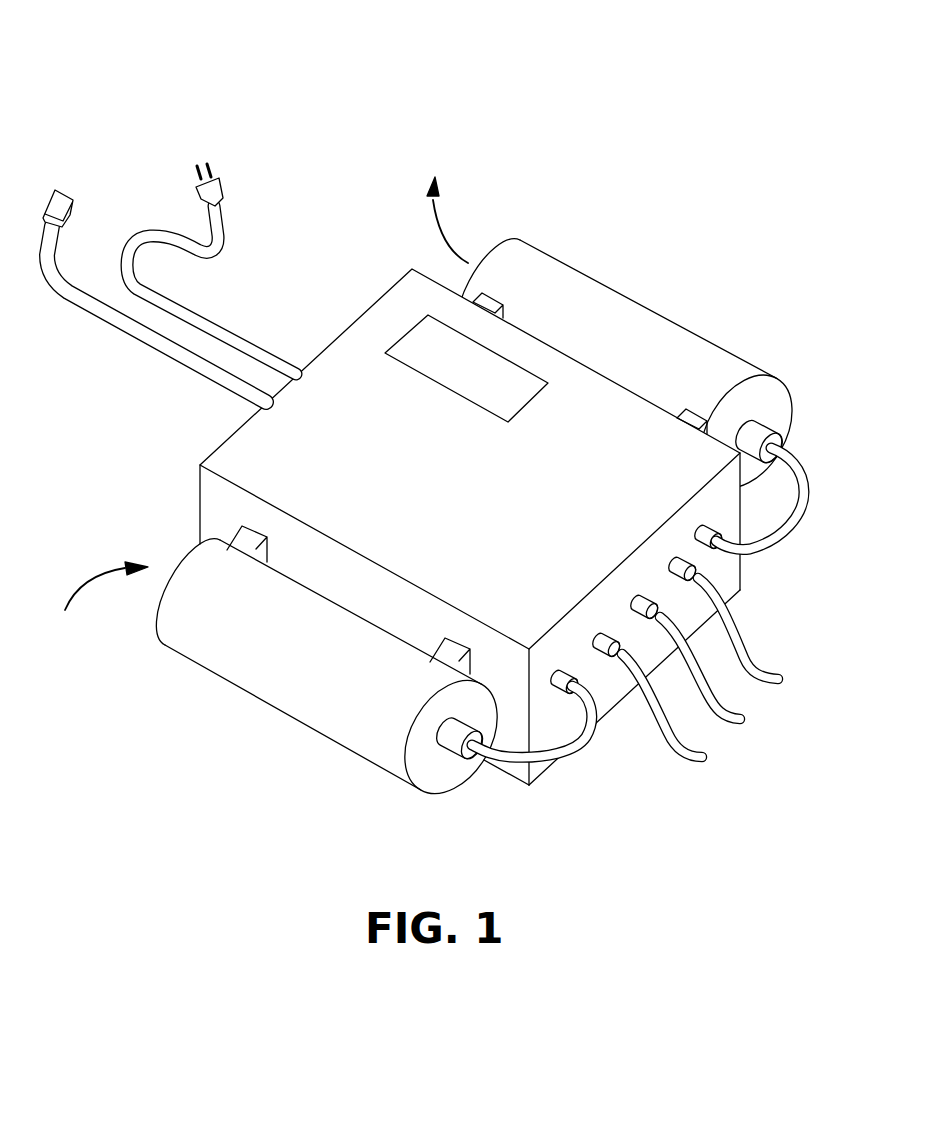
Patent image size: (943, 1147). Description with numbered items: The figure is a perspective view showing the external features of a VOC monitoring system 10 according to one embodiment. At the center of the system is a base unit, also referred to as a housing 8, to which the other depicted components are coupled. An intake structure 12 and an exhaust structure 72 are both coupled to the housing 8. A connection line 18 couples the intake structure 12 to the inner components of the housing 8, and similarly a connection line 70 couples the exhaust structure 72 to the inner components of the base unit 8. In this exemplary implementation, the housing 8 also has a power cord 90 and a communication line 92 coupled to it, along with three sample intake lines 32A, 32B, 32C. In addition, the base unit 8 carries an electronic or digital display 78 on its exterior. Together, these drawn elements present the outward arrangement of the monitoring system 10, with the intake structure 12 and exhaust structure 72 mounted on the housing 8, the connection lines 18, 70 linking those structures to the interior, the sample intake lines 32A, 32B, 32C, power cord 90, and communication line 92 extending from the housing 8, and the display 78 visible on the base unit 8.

The VOC monitoring system 10 is at (442, 424).
The base unit 8 is at (248, 455).
The intake structure 12 is at (263, 677).
The connection line 18 is at (548, 752).
The sample intake line 32A is at (683, 758).
The sample intake line 32B is at (726, 728).
The sample intake line 32C is at (762, 688).
The connection line 70 is at (803, 510).
The exhaust structure 72 is at (607, 330).
The electronic or digital display 78 is at (407, 343).
The power cord 90 is at (233, 226).
The communication line 92 is at (80, 307).